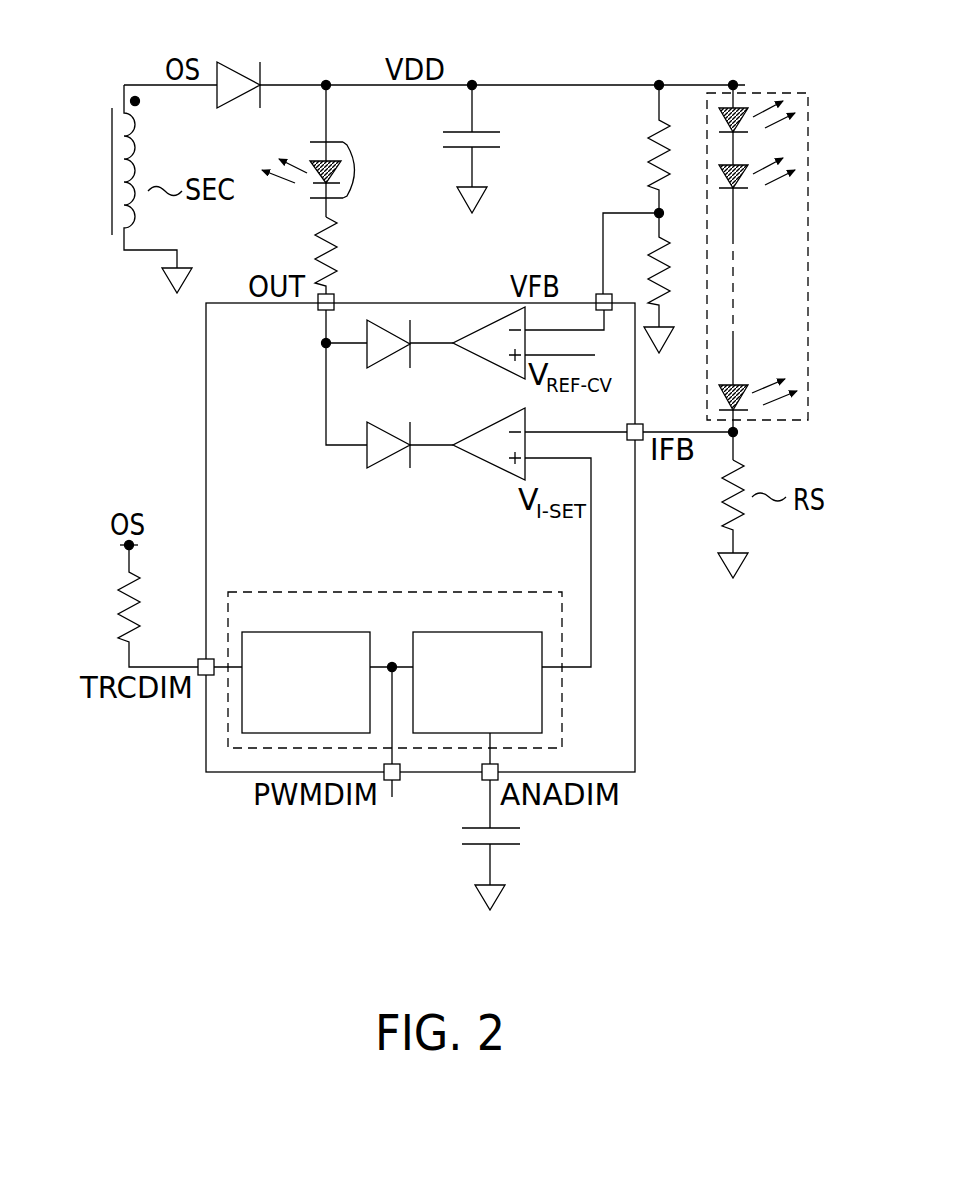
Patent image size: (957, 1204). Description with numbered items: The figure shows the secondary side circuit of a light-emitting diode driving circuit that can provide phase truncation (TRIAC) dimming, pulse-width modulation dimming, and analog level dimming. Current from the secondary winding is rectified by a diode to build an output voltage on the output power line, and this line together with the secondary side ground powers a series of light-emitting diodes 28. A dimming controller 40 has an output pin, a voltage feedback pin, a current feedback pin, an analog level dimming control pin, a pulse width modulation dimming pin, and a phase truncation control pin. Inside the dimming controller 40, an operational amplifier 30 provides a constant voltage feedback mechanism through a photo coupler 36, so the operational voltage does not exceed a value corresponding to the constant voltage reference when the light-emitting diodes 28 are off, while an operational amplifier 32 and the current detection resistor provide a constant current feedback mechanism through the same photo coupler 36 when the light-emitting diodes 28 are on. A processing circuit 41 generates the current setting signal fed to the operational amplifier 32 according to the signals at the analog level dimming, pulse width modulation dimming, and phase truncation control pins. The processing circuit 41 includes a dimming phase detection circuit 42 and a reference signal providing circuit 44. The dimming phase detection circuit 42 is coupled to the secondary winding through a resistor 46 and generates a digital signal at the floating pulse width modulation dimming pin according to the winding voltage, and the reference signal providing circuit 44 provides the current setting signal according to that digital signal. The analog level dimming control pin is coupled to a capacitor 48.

The light-emitting diodes 28 is at (808, 128).
The operational amplifier 30 is at (492, 366).
The operational amplifier 32 is at (492, 470).
The photo coupler 36 is at (357, 170).
The dimming controller 40 is at (280, 444).
The processing circuit 41 is at (395, 590).
The dimming phase detection circuit 42 is at (320, 701).
The reference signal providing circuit 44 is at (492, 704).
The resistor 46 is at (112, 597).
The capacitor 48 is at (454, 835).